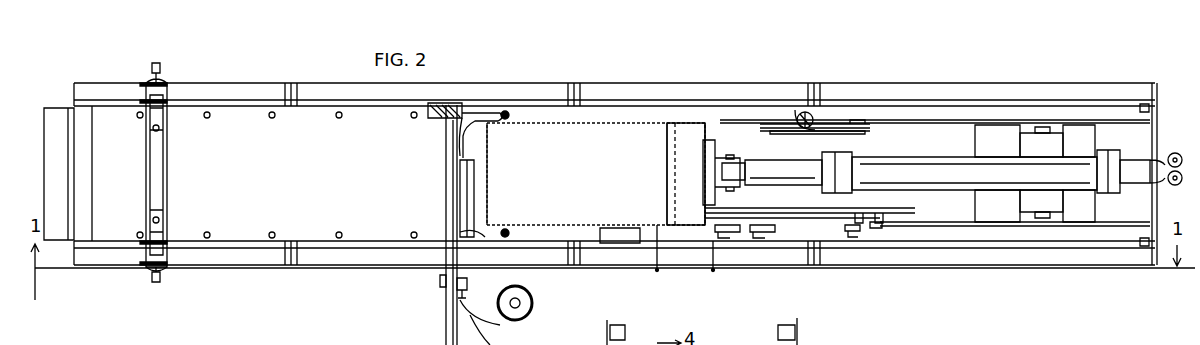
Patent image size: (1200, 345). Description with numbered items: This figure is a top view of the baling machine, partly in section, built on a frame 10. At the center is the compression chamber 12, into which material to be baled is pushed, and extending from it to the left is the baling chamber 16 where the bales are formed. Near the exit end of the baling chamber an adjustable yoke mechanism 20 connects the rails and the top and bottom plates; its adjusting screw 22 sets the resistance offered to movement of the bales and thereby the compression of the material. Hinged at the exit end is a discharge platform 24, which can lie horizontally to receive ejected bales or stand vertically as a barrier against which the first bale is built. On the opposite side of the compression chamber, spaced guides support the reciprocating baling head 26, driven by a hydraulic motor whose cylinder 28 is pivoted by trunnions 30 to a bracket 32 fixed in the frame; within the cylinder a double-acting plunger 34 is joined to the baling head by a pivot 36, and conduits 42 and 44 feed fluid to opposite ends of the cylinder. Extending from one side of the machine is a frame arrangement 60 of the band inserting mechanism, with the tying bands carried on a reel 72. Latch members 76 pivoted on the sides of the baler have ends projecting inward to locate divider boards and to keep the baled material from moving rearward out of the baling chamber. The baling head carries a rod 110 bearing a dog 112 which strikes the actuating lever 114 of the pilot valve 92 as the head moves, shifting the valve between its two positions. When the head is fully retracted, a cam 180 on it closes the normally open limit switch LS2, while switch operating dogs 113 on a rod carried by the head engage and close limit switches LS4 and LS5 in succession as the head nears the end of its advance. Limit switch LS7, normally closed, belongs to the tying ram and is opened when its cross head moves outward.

The frame 10 is at (662, 84).
The compression chamber 12 is at (607, 181).
The baling chamber 16 is at (297, 183).
The adjustable yoke mechanism 20 is at (168, 80).
The adjusting screw 22 is at (158, 280).
The discharge platform 24 is at (60, 102).
The baling head 26 is at (693, 165).
The cylinder 28 is at (932, 168).
The trunnions 30 is at (1045, 128).
The bracket 32 is at (1033, 140).
The double-acting plunger 34 is at (806, 165).
The pivot 36 is at (735, 187).
The conduit 42 is at (1182, 185).
The conduit 44 is at (1167, 153).
The frame arrangement 60 is at (446, 315).
The reel 72 is at (532, 301).
The latch members 76 is at (468, 200).
The pilot valve 92 is at (830, 130).
The rod 110 is at (833, 125).
The dog 112 is at (790, 125).
The switch operating dogs 113 is at (900, 225).
The actuating lever 114 is at (797, 128).
The cam 180 is at (853, 223).
The limit switch LS2 is at (858, 240).
The limit switch LS4 is at (782, 240).
The limit switch LS5 is at (740, 240).
The limit switch LS7 is at (440, 280).